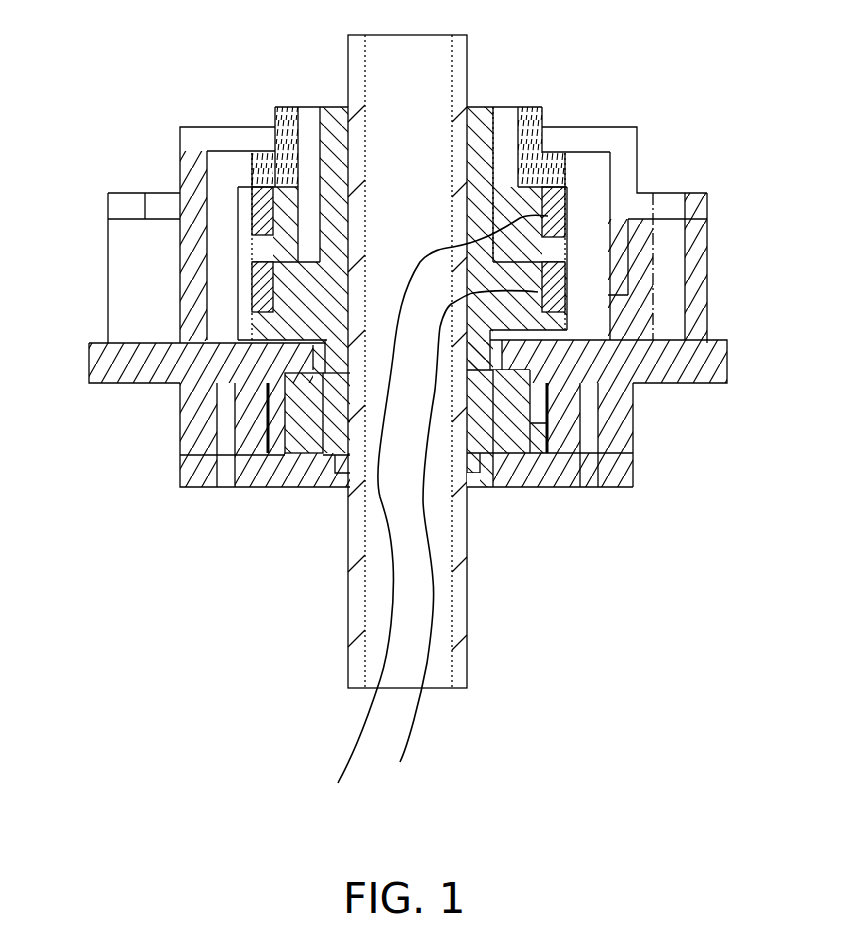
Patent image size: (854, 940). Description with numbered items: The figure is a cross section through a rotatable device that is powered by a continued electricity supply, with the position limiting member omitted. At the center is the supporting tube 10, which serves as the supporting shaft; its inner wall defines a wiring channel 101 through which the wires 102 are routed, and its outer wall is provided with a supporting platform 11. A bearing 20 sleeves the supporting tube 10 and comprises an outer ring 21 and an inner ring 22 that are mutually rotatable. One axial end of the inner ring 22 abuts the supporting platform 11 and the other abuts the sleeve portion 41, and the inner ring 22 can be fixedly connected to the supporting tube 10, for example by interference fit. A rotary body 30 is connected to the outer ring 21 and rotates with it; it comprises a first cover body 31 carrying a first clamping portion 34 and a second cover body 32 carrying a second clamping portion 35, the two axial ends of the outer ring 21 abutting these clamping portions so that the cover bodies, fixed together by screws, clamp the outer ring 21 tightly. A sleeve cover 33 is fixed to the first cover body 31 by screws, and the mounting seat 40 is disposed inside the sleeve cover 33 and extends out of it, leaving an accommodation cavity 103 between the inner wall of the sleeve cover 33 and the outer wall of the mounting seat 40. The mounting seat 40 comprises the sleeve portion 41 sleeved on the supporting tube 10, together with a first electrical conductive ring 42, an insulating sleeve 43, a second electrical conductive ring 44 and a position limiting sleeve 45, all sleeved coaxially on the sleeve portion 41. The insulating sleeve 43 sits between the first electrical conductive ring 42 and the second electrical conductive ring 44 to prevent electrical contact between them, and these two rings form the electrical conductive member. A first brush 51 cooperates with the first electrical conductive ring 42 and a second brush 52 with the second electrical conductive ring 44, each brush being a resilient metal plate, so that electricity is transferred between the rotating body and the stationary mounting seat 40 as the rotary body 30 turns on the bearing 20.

The supporting tube 10 is at (442, 379).
The wiring channel 101 is at (377, 545).
The wires 102 is at (352, 750).
The accommodation cavity 103 is at (225, 242).
The supporting platform 11 is at (477, 483).
The bearing 20 is at (725, 648).
The outer ring 21 is at (550, 475).
The inner ring 22 is at (525, 487).
The rotary body 30 is at (51, 418).
The first cover body 31 is at (111, 374).
The second cover body 32 is at (183, 477).
The sleeve cover 33 is at (227, 137).
The first clamping portion 34 is at (191, 240).
The second clamping portion 35 is at (300, 470).
The mounting seat 40 is at (793, 215).
The sleeve portion 41 is at (523, 107).
The first electrical conductive ring 42 is at (567, 264).
The insulating sleeve 43 is at (563, 255).
The second electrical conductive ring 44 is at (543, 207).
The position limiting sleeve 45 is at (543, 127).
The first brush 51 is at (565, 283).
The second brush 52 is at (237, 200).